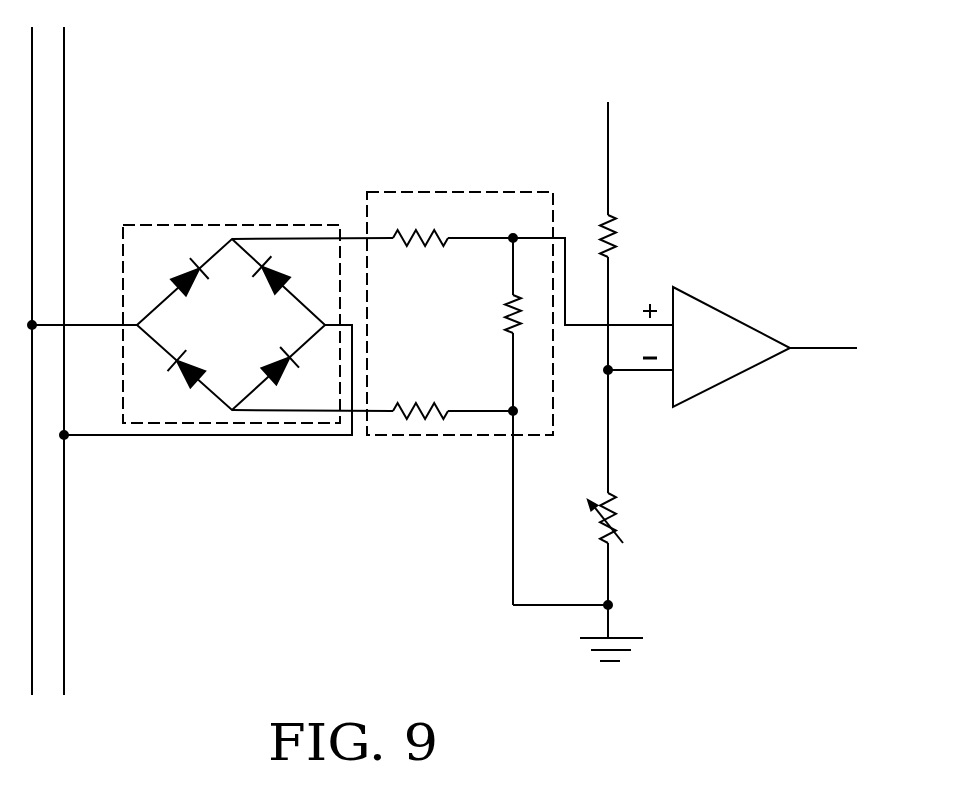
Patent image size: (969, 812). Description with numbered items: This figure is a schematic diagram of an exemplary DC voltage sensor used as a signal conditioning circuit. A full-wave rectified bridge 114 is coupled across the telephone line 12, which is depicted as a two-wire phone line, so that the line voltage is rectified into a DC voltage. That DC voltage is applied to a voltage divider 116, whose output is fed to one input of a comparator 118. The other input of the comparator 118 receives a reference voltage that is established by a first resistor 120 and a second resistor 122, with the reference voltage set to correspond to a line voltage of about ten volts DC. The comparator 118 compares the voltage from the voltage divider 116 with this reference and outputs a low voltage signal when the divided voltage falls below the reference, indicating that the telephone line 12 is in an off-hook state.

The telephone line 12 is at (32, 52).
The full-wave rectified bridge 114 is at (190, 223).
The voltage divider 116 is at (418, 192).
The comparator 118 is at (717, 303).
The first resistor 120 is at (613, 217).
The second resistor 122 is at (612, 492).